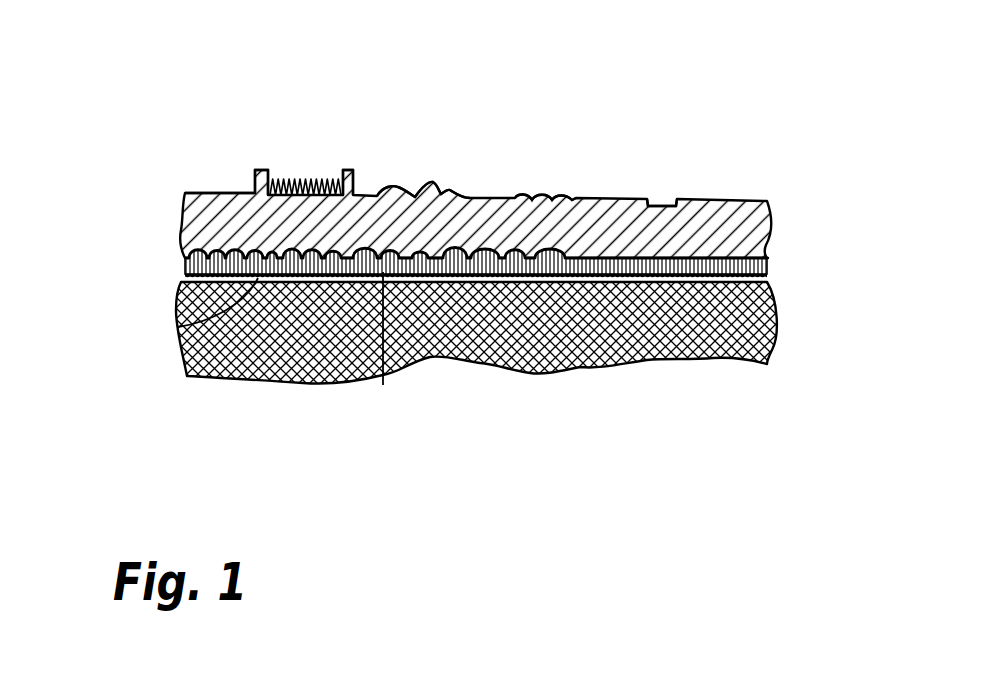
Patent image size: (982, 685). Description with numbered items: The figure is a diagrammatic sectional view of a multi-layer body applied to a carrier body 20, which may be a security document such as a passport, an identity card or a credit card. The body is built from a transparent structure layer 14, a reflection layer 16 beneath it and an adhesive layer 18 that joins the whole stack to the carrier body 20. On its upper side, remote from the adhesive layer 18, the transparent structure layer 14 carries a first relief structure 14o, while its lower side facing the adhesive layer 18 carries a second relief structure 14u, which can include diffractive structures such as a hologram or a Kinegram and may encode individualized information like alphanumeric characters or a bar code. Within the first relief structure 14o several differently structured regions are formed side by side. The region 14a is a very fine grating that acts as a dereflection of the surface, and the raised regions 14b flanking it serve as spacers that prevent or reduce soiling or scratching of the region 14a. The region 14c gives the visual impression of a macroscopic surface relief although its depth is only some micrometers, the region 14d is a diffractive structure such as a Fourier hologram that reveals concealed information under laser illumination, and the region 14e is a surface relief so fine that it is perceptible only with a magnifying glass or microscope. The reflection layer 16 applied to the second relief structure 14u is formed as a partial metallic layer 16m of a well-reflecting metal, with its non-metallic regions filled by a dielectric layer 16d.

The transparent structure layer 14 is at (766, 238).
The region with very fine grating structure 14a is at (315, 168).
The spacer regions 14b is at (260, 168).
The macroscopic surface relief region 14c is at (444, 187).
The diffractive structure region 14d is at (553, 200).
The microscopic surface relief region 14e is at (668, 202).
The first relief structure 14o is at (206, 162).
The second relief structure 14u is at (165, 247).
The reflection layer 16 is at (166, 271).
The partial metallic layer 16m is at (178, 327).
The dielectric layer 16d is at (383, 385).
The adhesive layer 18 is at (768, 270).
The carrier body 20 is at (770, 365).